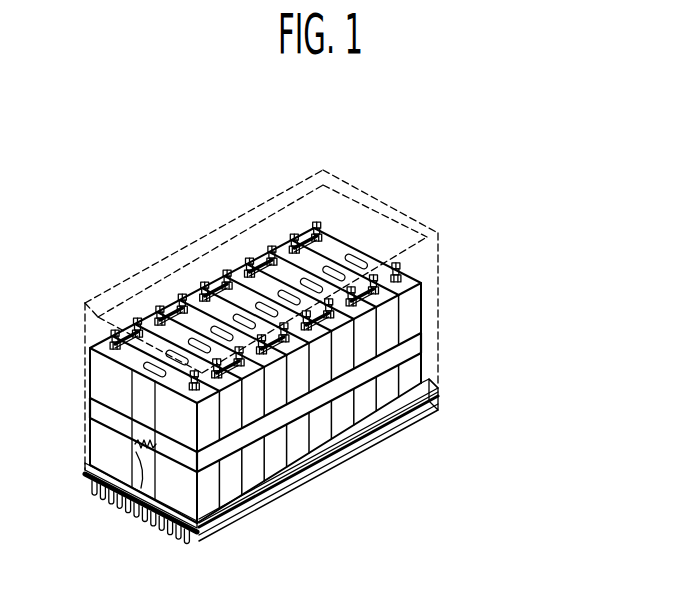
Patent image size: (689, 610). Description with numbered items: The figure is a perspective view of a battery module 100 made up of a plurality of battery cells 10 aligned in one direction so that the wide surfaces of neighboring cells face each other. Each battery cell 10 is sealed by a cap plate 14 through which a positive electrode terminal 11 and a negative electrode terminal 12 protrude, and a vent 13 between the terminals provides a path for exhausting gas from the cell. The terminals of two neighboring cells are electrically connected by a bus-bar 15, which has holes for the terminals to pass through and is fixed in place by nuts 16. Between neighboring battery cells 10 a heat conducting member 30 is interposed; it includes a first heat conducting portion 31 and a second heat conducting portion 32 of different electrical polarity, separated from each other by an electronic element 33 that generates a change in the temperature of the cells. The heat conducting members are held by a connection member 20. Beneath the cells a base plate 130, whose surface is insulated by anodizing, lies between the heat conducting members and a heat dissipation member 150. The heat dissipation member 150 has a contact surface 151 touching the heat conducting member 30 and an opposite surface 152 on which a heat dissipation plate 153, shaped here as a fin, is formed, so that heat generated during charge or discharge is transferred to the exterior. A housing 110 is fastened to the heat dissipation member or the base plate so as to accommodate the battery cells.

The battery module 100 is at (531, 141).
The housing 110 is at (192, 248).
The battery cell 10 is at (290, 322).
The positive electrode terminal 11 is at (313, 220).
The negative electrode terminal 12 is at (392, 254).
The vent 13 is at (363, 248).
The cap plate 14 is at (333, 243).
The bus-bar 15 is at (300, 223).
The nut 16 is at (420, 277).
The connection member 20 is at (413, 340).
The heat conducting member 30 is at (112, 521).
The first heat conducting portion 31 is at (112, 462).
The second heat conducting portion 32 is at (147, 532).
The electronic element 33 is at (128, 514).
The base plate 130 is at (341, 493).
The heat dissipation member 150 is at (318, 498).
The contact surface 151 is at (243, 520).
The opposite surface 152 is at (205, 545).
The heat dissipation plate 153 is at (278, 502).